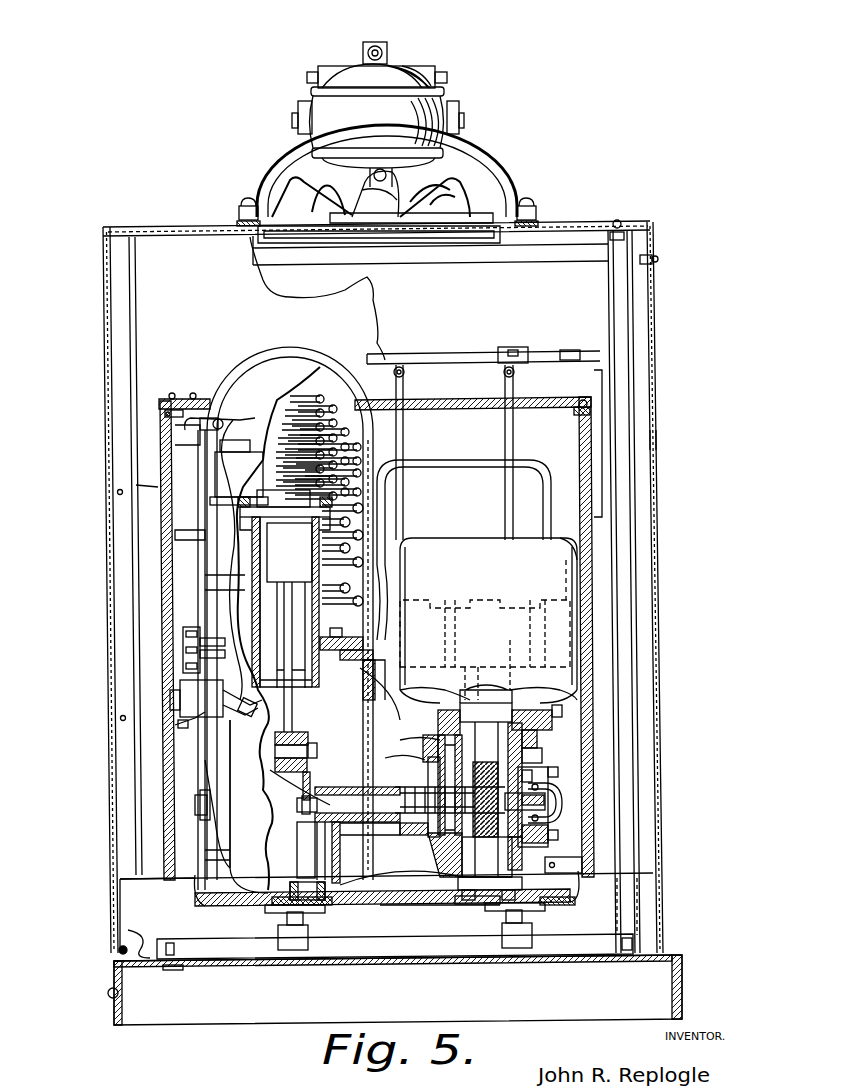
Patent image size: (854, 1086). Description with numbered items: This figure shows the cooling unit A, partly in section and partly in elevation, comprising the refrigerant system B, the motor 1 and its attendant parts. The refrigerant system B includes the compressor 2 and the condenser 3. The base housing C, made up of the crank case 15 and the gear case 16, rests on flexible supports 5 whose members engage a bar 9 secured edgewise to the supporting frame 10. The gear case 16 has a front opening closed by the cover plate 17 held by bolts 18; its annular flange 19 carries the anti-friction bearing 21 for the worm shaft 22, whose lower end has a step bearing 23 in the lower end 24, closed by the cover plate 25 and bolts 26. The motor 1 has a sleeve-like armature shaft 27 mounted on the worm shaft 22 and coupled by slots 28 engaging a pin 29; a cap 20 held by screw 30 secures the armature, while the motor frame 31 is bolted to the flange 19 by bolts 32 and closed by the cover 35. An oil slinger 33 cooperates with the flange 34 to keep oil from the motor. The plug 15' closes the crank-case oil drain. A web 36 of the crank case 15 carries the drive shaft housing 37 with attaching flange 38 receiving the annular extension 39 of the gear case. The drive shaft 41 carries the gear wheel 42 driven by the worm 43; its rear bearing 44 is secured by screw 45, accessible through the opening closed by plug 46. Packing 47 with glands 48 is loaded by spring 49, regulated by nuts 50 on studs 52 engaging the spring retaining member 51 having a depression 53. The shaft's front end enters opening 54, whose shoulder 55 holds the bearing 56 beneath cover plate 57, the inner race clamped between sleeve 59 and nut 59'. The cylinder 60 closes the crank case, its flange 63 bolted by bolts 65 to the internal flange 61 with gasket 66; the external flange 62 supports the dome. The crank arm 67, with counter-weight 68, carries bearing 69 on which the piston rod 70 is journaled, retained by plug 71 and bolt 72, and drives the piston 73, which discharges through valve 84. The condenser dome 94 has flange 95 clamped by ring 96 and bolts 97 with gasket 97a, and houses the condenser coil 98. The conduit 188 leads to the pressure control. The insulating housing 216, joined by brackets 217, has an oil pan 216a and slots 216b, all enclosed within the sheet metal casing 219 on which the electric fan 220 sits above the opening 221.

The motor 1 is at (580, 615).
The compressor 2 is at (285, 503).
The condenser 3 is at (286, 370).
The non-adjustable supports 5 is at (405, 927).
The bar 9 is at (395, 946).
The supporting frame 10 is at (398, 990).
The crank case 15 is at (140, 857).
The plug 15' is at (315, 914).
The gear case 16 is at (440, 918).
The cover plate 17 is at (553, 747).
The bolts 18 is at (550, 723).
The annular flange 19 is at (436, 723).
The cap 20 is at (523, 523).
The anti-friction bearing 21 is at (543, 683).
The worm shaft 22 is at (685, 641).
The step bearing 23 is at (462, 893).
The lower end of casing 24 is at (545, 855).
The cover plate 25 is at (468, 903).
The bolts 26 is at (548, 906).
The armature shaft 27 is at (485, 633).
The slots 28 is at (511, 707).
The pin 29 is at (522, 665).
The screw 30 is at (478, 546).
The motor frame 31 is at (552, 579).
The bolts 32 is at (380, 690).
The oil deflector or slinger 33 is at (460, 690).
The flange 34 is at (445, 700).
The cap or cover 35 is at (573, 547).
The web 36 is at (401, 869).
The drive shaft housing 37 is at (370, 834).
The attaching flange 38 is at (417, 748).
The annular extension 39 is at (436, 852).
The drive shaft 41 is at (430, 804).
The gear wheel 42 is at (474, 799).
The worm 43 is at (510, 780).
The bearing 44 is at (300, 842).
The screw 45 is at (288, 852).
The plug 46 is at (201, 803).
The packing 47 is at (352, 790).
The glands 48 is at (325, 746).
The spring 49 is at (402, 835).
The nuts 50 is at (442, 808).
The spring retaining member 51 is at (428, 790).
The studs 52 is at (445, 883).
The depression 53 is at (460, 785).
The opening 54 is at (557, 767).
The shoulder 55 is at (557, 783).
The bearing 56 is at (560, 802).
The cover plate 57 is at (567, 810).
The sleeve 59 is at (618, 834).
The nut 59' is at (620, 802).
The cylinder 60 is at (220, 588).
The internal flange 61 is at (356, 680).
The external flange 62 is at (189, 657).
The annular flange 63 is at (289, 627).
The bolts 65 is at (346, 635).
The gasket 66 is at (427, 570).
The crank arm 67 is at (297, 805).
The counter-weight 68 is at (305, 858).
The bearing 69 is at (302, 732).
The piston rod 70 is at (232, 802).
The retaining plug 71 is at (244, 794).
The bolt 72 is at (308, 740).
The piston 73 is at (285, 602).
The discharge valve 84 is at (239, 472).
The condenser dome 94 is at (237, 392).
The flange 95 is at (190, 652).
The ring 96 is at (189, 641).
The bolts 97 is at (181, 626).
The gasket 97a is at (446, 633).
The condenser coil 98 is at (352, 443).
The conduit 188 is at (178, 540).
The housing 216 is at (548, 397).
The oil receptacle or pan 216a is at (205, 905).
The slots 216b is at (162, 411).
The brackets 217 is at (582, 409).
The sheet metal casing 219 is at (657, 440).
The electric fan 220 is at (378, 114).
The opening 221 is at (263, 205).
The cooling unit A is at (464, 501).
The refrigerant system B is at (221, 655).
The housing C is at (300, 787).